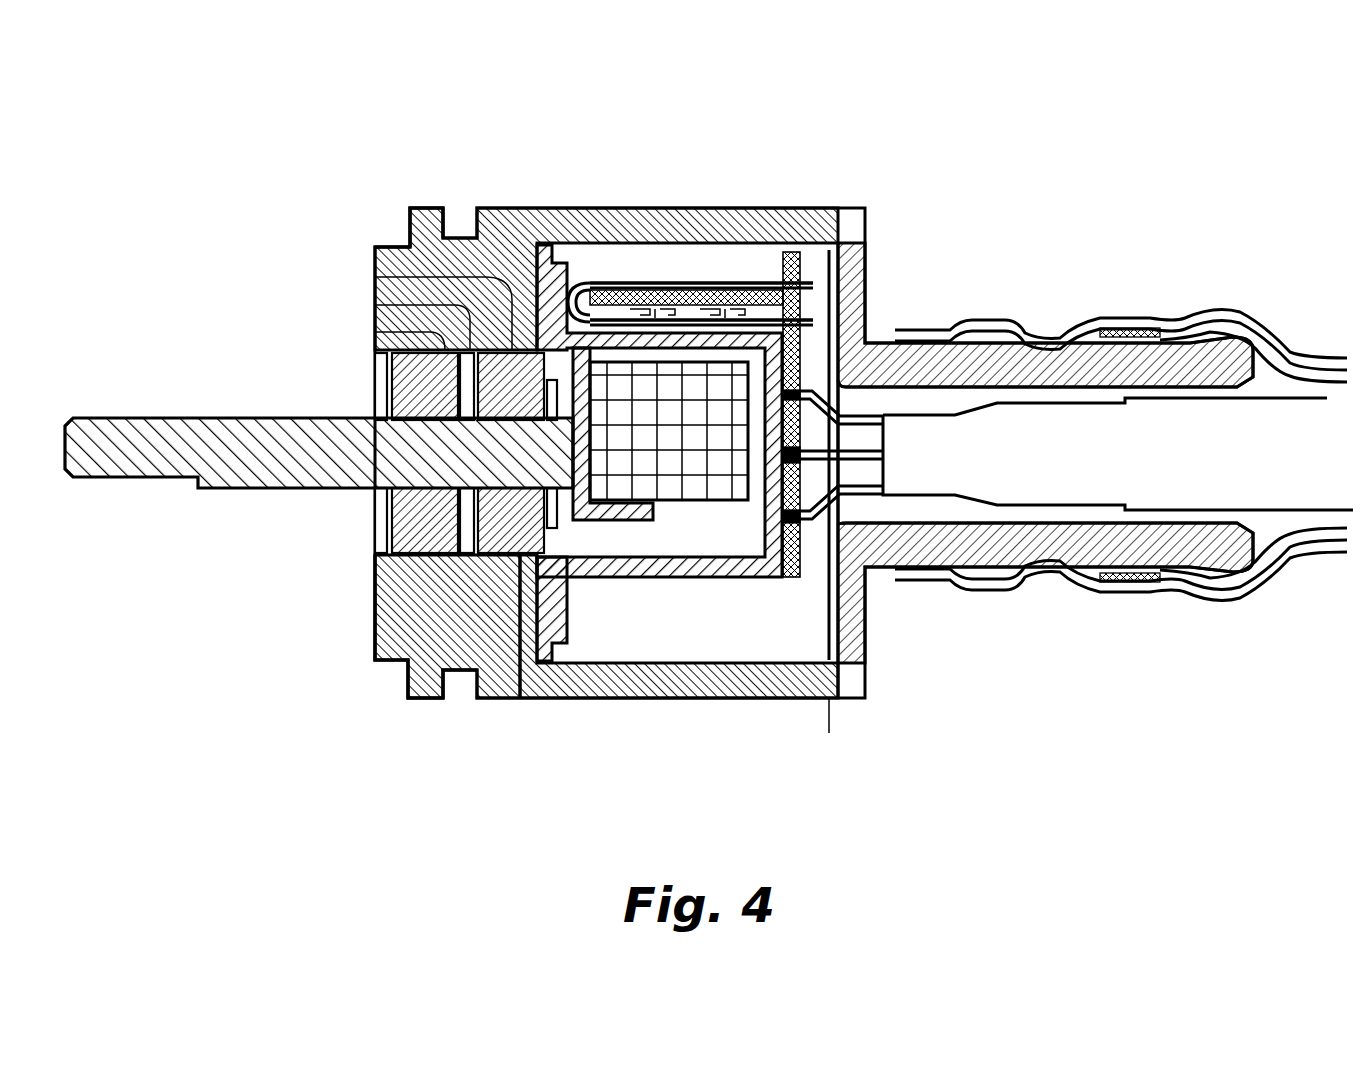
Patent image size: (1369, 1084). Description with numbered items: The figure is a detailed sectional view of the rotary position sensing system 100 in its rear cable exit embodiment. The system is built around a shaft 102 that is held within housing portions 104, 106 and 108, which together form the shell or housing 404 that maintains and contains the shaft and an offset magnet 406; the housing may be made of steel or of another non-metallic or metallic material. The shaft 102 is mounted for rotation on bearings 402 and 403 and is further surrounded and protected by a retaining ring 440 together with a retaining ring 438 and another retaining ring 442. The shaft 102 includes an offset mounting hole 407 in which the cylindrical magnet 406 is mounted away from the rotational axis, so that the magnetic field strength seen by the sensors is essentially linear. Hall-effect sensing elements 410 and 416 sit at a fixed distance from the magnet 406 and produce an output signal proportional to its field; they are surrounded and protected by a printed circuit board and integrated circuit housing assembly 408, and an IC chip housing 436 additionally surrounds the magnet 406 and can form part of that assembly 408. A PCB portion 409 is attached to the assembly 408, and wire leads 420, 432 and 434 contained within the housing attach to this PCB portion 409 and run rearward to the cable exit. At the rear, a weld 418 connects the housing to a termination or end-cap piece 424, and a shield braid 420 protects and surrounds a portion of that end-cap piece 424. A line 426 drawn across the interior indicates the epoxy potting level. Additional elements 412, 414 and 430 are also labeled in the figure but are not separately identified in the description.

The system 100 is at (200, 138).
The shaft 102 is at (160, 417).
The housing portion 104 is at (502, 208).
The housing portion 106 is at (425, 208).
The housing portion 108 is at (393, 247).
The bearing 402 is at (375, 332).
The bearing 403 is at (375, 277).
The housing 404 is at (375, 605).
The offset magnet 406 is at (673, 503).
The offset mounting hole 407 is at (518, 697).
The PCB and IC housing assembly 408 is at (668, 283).
The PCB portion 409 is at (862, 275).
The Hall-effect sensing element 410 is at (615, 283).
The lower lead bar 412 is at (653, 283).
The contact 414 is at (691, 276).
The Hall-effect sensing element 416 is at (743, 283).
The weld 418 is at (857, 208).
The shield braid 420 is at (1113, 585).
The termination or end-cap piece 424 is at (860, 697).
The line 426 is at (827, 723).
The upper terminal pin 430 is at (855, 412).
The wire lead 432 is at (872, 455).
The wire lead 434 is at (862, 485).
The IC chip housing 436 is at (680, 577).
The retaining ring 438 is at (375, 305).
The retaining ring 440 is at (550, 445).
The retaining ring 442 is at (372, 395).